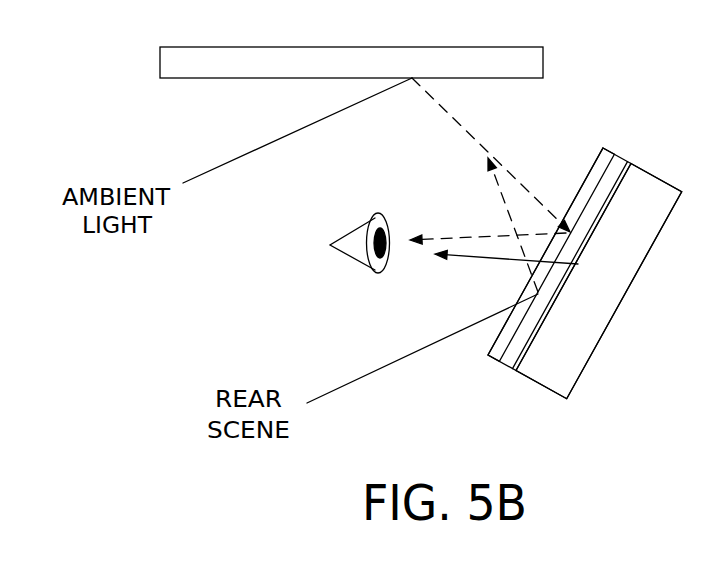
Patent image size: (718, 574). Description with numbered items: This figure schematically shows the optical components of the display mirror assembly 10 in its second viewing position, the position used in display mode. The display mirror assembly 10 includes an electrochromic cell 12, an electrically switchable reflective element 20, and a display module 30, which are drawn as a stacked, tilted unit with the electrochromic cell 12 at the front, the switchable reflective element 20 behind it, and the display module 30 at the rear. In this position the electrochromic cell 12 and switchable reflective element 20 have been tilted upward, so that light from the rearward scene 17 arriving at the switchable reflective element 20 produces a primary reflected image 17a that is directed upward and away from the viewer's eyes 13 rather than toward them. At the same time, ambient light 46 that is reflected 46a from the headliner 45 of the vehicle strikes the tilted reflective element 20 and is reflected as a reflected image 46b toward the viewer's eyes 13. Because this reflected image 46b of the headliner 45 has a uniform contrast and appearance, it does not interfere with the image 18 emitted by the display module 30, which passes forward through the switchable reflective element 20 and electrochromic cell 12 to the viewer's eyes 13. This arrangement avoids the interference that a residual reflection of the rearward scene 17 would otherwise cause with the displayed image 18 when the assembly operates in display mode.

The display mirror assembly 10 is at (678, 139).
The electrochromic cell 12 is at (607, 160).
The viewer's eyes 13 is at (375, 218).
The rearward scene 17 is at (388, 365).
The primary reflected image 17a is at (494, 178).
The image from display module 18 is at (465, 258).
The electrically switchable reflective element 20 is at (512, 358).
The display module 30 is at (560, 377).
The headliner 45 is at (440, 52).
The ambient light 46 is at (262, 147).
The reflected ambient light 46a is at (475, 138).
The reflected image of ambient light 46b is at (490, 237).